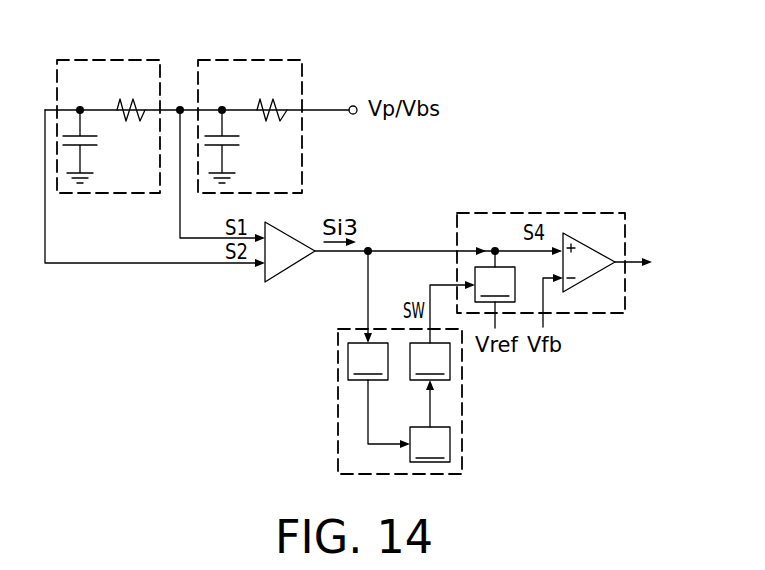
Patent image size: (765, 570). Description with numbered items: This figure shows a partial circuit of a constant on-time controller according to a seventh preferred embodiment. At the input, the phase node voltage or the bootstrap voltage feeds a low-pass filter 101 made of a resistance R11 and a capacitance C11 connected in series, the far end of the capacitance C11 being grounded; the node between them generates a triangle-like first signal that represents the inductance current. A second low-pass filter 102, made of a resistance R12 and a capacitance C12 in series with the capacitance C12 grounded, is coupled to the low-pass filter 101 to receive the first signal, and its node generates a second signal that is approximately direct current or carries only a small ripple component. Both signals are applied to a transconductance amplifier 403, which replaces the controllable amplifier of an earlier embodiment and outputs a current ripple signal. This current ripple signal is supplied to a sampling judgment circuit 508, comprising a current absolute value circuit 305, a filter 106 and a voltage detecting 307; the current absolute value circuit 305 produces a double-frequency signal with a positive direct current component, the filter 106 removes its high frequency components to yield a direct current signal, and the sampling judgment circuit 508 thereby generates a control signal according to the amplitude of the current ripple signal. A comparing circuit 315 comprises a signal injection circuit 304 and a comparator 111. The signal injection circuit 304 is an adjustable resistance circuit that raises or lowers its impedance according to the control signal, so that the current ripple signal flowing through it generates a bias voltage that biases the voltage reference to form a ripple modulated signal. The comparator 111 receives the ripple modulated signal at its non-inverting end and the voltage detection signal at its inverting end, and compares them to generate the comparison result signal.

The low-pass filter 101 is at (247, 58).
The low-pass filter 102 is at (106, 58).
The resistance R11 is at (273, 95).
The capacitance C11 is at (241, 146).
The resistance R12 is at (134, 95).
The capacitance C12 is at (99, 146).
The transconductance amplifier 403 is at (299, 262).
The comparing circuit 315 is at (549, 211).
The signal injection circuit 304 is at (495, 284).
The comparator 111 is at (578, 280).
The sampling judgment circuit 508 is at (338, 398).
The current absolute value circuit 305 is at (368, 361).
The voltage detecting 307 is at (430, 361).
The filter 106 is at (430, 444).